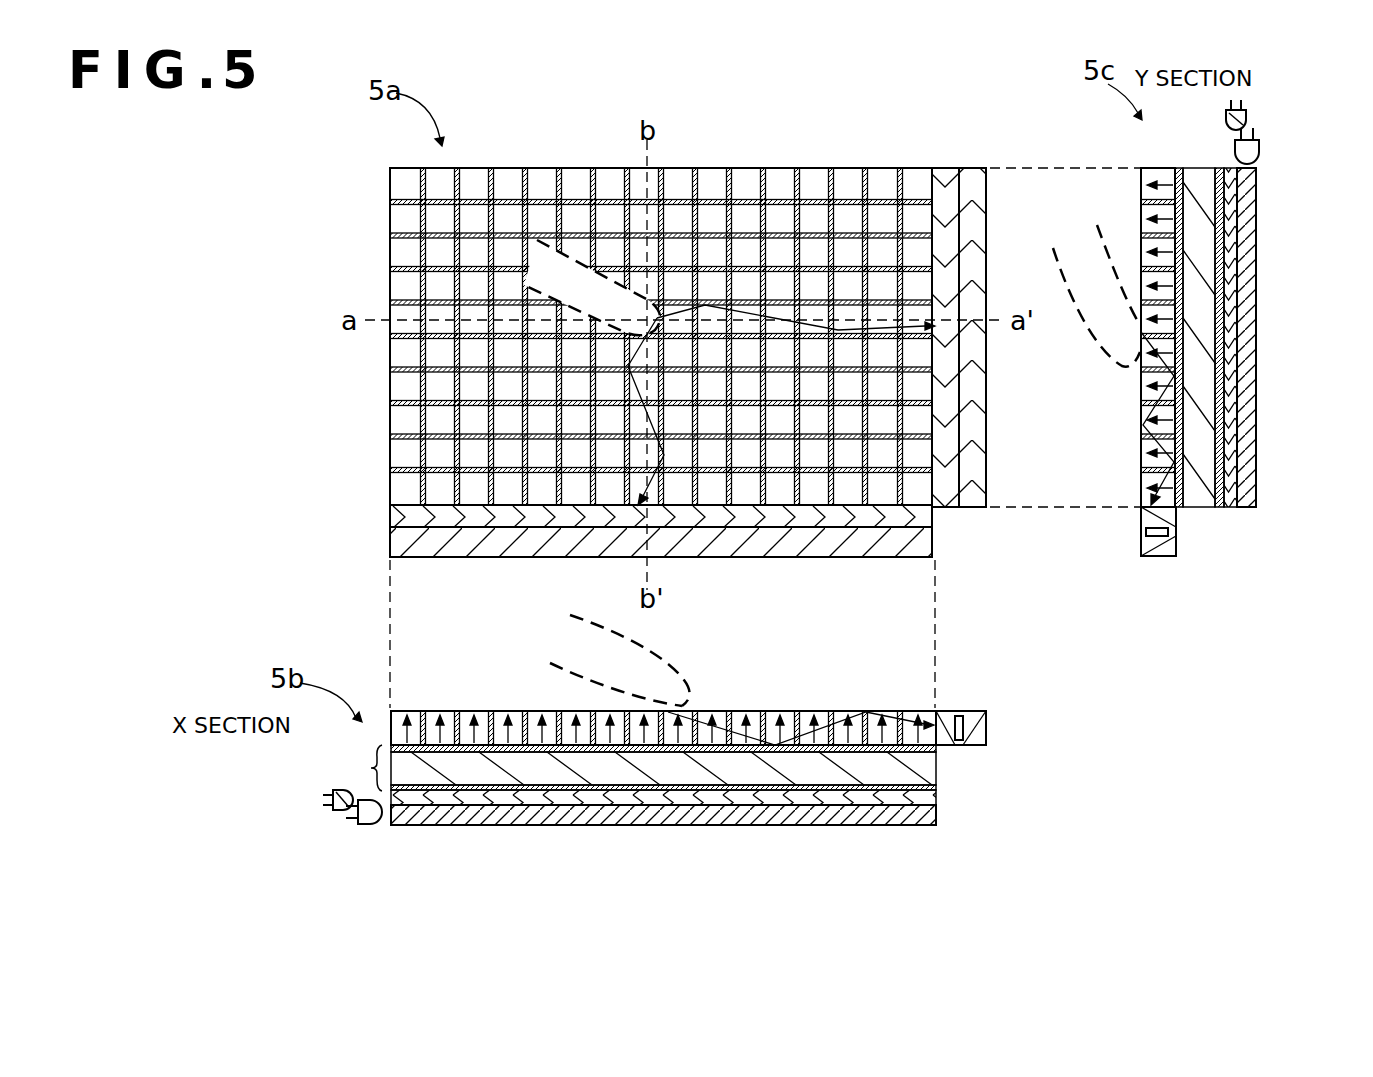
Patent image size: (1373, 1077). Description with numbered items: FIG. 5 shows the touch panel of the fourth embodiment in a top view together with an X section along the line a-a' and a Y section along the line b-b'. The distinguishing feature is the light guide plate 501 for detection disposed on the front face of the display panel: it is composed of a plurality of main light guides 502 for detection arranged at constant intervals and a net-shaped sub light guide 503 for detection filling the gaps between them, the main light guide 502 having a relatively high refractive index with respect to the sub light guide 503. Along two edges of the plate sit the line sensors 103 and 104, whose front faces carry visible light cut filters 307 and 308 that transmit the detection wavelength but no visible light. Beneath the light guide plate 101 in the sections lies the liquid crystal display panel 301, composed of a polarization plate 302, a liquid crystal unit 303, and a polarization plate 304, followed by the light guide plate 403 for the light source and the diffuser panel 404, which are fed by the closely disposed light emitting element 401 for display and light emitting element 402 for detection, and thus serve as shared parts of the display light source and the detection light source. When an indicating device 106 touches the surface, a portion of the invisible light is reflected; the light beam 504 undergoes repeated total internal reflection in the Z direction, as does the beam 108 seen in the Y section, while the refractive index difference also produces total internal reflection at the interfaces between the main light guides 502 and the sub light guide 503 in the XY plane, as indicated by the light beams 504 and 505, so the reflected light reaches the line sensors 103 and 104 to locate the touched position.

The light guide plate 101 is at (448, 710).
The line sensor 103 is at (392, 548).
The line sensor 104 is at (968, 168).
The indicating device 106 is at (640, 630).
The beam 108 is at (1145, 378).
The liquid crystal display panel 301 is at (370, 768).
The polarization plate 302 is at (938, 748).
The liquid crystal unit 303 is at (938, 770).
The polarization plate 304 is at (938, 788).
The visible light cut filter 307 is at (1143, 530).
The visible light cut filter 308 is at (958, 712).
The light emitting element for display 401 is at (375, 826).
The light emitting element for detection 402 is at (330, 803).
The light guide plate for a light source 403 is at (582, 826).
The diffuser panel 404 is at (800, 808).
The light guide plate for detection 501 is at (392, 168).
The main light guide for detection 502 is at (400, 457).
The sub light guide for detection 503 is at (400, 292).
The light beam 504 is at (655, 472).
The light beam 505 is at (772, 312).